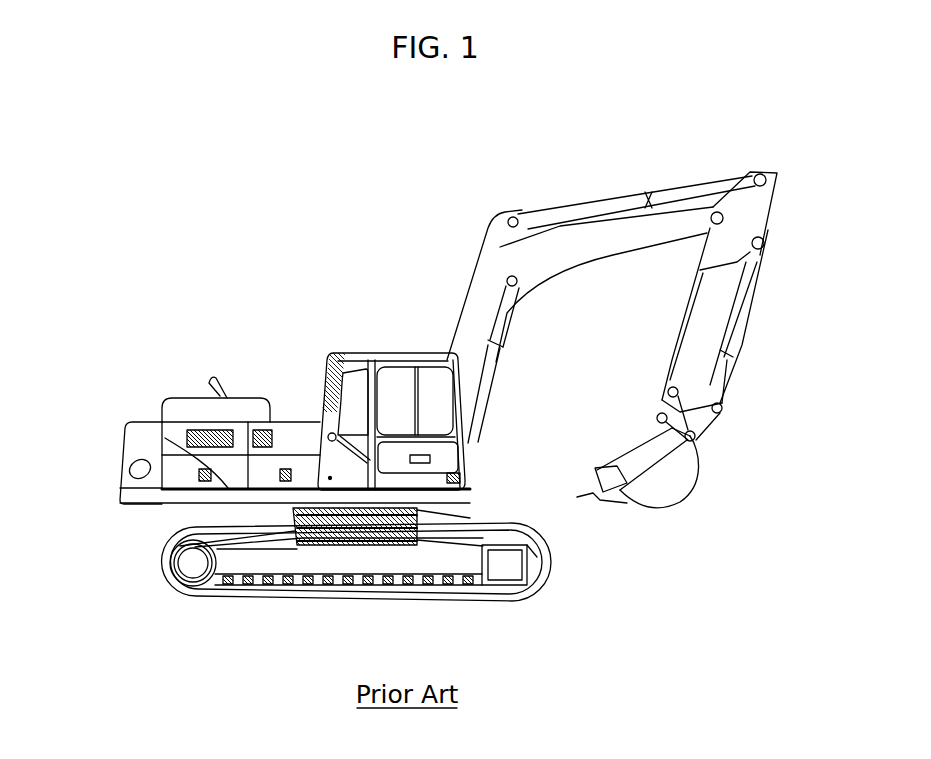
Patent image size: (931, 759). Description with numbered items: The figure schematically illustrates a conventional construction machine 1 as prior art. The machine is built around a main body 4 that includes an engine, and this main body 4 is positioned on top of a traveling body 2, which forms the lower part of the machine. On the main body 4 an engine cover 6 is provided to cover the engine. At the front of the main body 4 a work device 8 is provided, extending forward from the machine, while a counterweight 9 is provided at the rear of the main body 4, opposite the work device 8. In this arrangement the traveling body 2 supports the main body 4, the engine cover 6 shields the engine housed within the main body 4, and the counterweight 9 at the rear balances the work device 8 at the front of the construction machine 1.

The construction machine 1 is at (377, 272).
The traveling body 2 is at (329, 600).
The main body 4 is at (297, 430).
The engine cover 6 is at (193, 408).
The work device 8 is at (541, 250).
The counterweight 9 is at (140, 433).